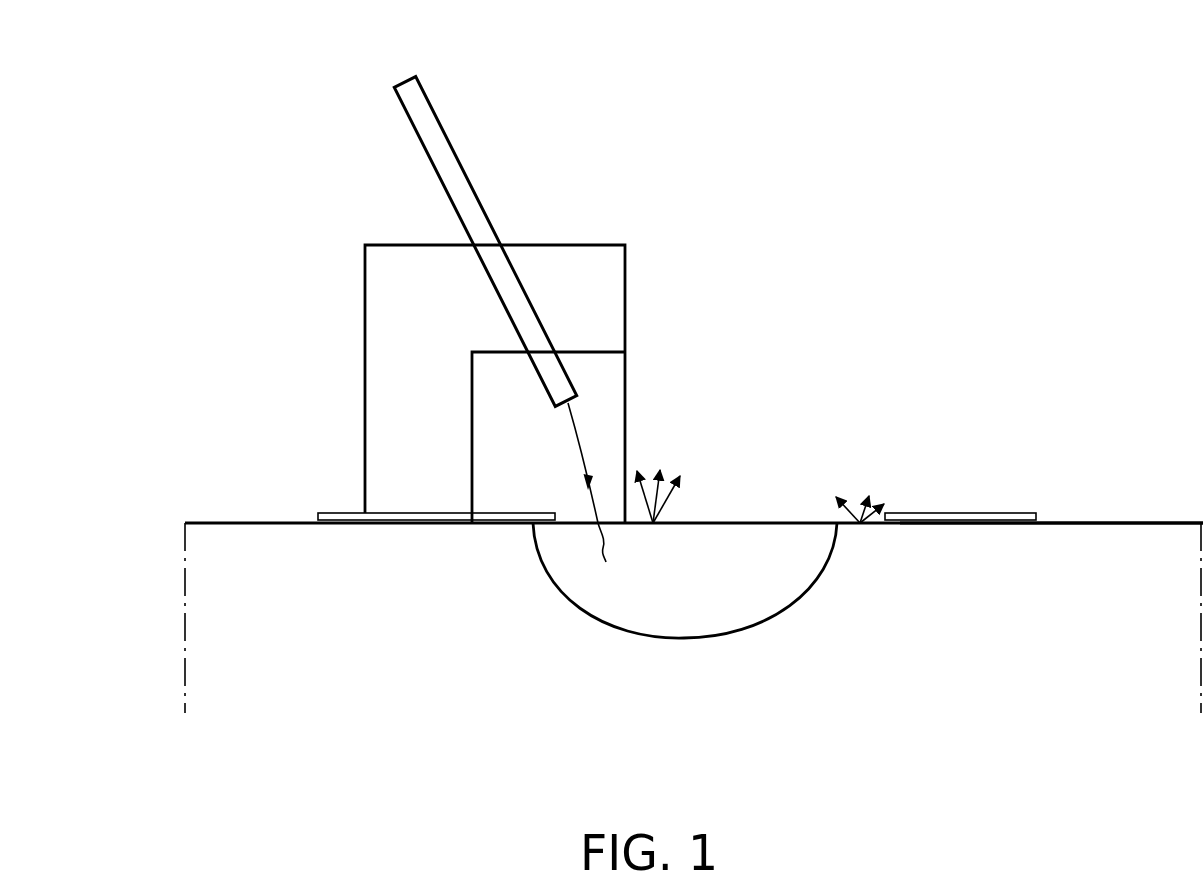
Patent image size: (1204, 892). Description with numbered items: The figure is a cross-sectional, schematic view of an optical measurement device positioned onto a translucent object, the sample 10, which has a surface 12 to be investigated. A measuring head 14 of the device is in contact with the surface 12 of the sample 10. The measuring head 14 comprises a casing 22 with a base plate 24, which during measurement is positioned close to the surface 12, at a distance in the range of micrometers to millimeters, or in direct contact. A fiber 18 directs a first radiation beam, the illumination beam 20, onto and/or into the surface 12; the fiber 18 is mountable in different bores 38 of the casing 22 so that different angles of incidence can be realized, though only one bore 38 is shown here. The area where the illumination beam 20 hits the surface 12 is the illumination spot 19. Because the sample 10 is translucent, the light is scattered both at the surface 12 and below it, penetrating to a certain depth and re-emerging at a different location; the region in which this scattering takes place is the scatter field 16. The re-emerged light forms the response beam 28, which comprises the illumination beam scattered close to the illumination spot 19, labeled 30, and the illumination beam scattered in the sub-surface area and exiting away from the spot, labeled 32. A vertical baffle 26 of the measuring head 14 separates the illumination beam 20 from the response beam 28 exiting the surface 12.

The sample 10 is at (700, 686).
The surface 12 is at (1119, 524).
The measuring head 14 is at (921, 110).
The scatter field 16 is at (787, 589).
The fiber 18 is at (453, 149).
The illumination spot 19 is at (608, 555).
The illumination beam 20 is at (576, 442).
The casing 22 is at (364, 378).
The base plate 24 is at (982, 512).
The vertical baffle 26 is at (625, 292).
The response beam 28 is at (801, 290).
The illumination beam scattered close to the illumination spot 30 is at (662, 446).
The illumination beam scattered in the sub-surface area 32 is at (876, 477).
The bore 38 is at (512, 228).